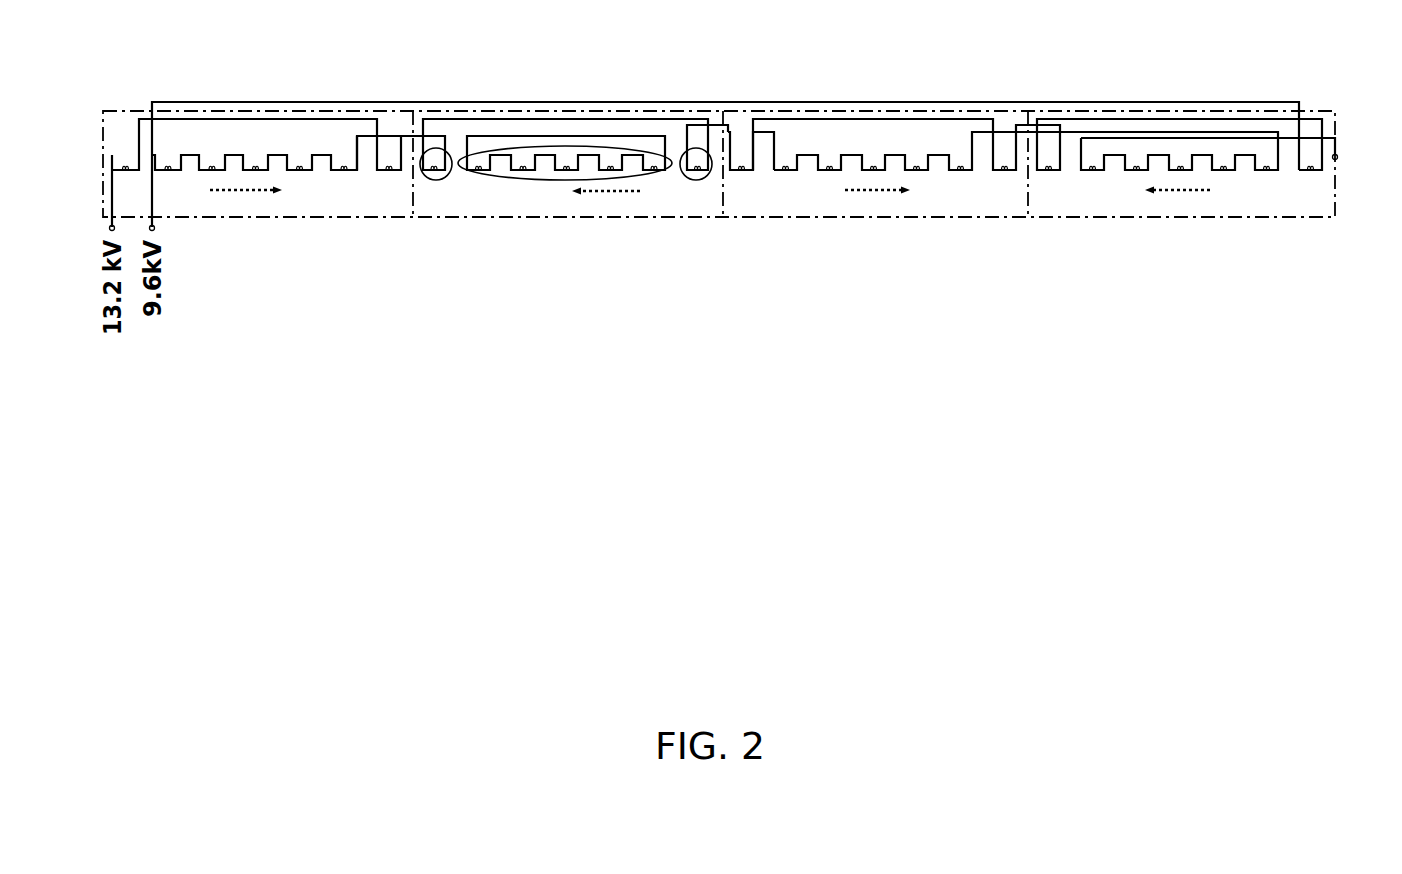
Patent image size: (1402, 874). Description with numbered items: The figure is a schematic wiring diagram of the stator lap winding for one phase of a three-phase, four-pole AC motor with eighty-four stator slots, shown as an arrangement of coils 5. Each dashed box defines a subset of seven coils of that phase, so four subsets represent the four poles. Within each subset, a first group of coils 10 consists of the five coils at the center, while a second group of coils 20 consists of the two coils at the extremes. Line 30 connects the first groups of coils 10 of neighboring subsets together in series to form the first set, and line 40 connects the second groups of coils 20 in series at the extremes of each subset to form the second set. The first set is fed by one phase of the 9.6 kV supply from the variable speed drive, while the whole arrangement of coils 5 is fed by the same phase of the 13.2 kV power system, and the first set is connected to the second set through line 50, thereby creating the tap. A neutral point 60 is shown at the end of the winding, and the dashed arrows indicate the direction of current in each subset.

The arrangement of coils 5 is at (851, 268).
The first group of coils 10 is at (551, 184).
The second group of coils 20 is at (687, 183).
The line 30 is at (742, 128).
The line 40 is at (657, 117).
The line 50 is at (492, 100).
The neutral point 60 is at (1336, 161).